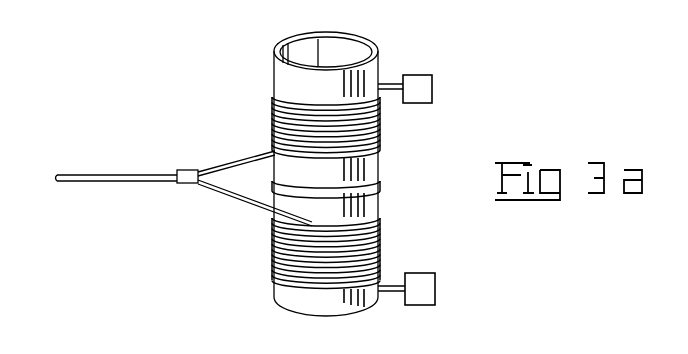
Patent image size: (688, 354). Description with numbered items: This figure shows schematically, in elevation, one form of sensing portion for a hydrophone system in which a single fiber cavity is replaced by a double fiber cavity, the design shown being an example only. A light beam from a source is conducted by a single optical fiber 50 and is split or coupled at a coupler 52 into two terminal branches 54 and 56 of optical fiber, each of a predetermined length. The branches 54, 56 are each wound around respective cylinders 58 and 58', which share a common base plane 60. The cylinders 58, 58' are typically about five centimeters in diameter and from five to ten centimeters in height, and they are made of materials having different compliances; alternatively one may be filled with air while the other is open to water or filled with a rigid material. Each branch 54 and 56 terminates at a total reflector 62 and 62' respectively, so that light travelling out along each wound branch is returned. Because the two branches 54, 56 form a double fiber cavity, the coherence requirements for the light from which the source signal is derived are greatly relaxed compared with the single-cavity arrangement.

The optical fiber 50 is at (106, 184).
The coupler 52 is at (186, 185).
The terminal branch 54 is at (241, 156).
The terminal branch 56 is at (238, 203).
The cylinder 58 is at (343, 134).
The cylinder 58' is at (346, 240).
The common base plane 60 is at (382, 184).
The total reflector 62 is at (416, 74).
The total reflector 62' is at (419, 274).